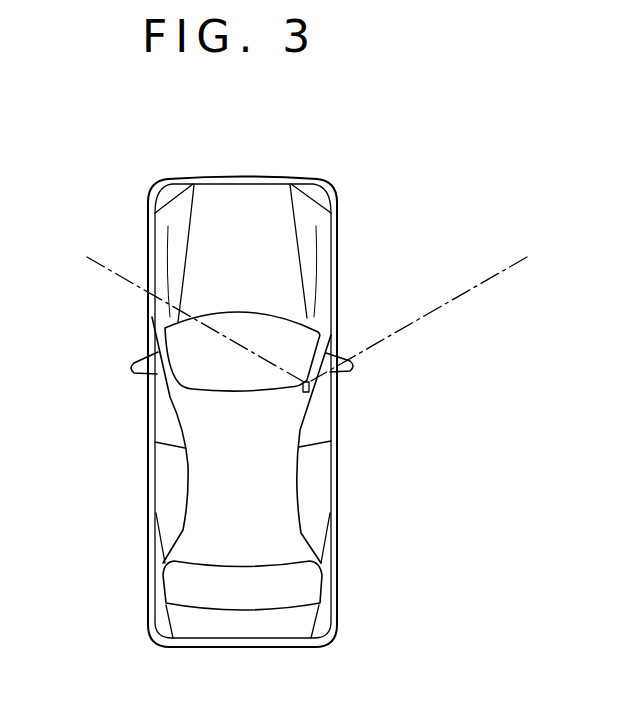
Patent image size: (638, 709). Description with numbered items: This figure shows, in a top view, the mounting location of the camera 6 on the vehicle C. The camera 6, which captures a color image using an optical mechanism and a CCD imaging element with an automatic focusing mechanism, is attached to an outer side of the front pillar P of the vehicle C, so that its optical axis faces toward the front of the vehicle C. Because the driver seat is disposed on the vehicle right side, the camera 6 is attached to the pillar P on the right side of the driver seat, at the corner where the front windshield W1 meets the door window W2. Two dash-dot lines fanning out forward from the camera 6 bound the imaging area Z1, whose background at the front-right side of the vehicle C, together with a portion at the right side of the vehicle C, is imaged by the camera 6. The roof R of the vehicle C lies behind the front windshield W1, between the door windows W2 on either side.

The vehicle C is at (222, 177).
The front windshield W1 is at (263, 322).
The door window W2 is at (326, 418).
The front pillar P is at (318, 348).
The camera 6 is at (304, 393).
The imaging area Z1 is at (427, 261).
The roof R is at (198, 463).